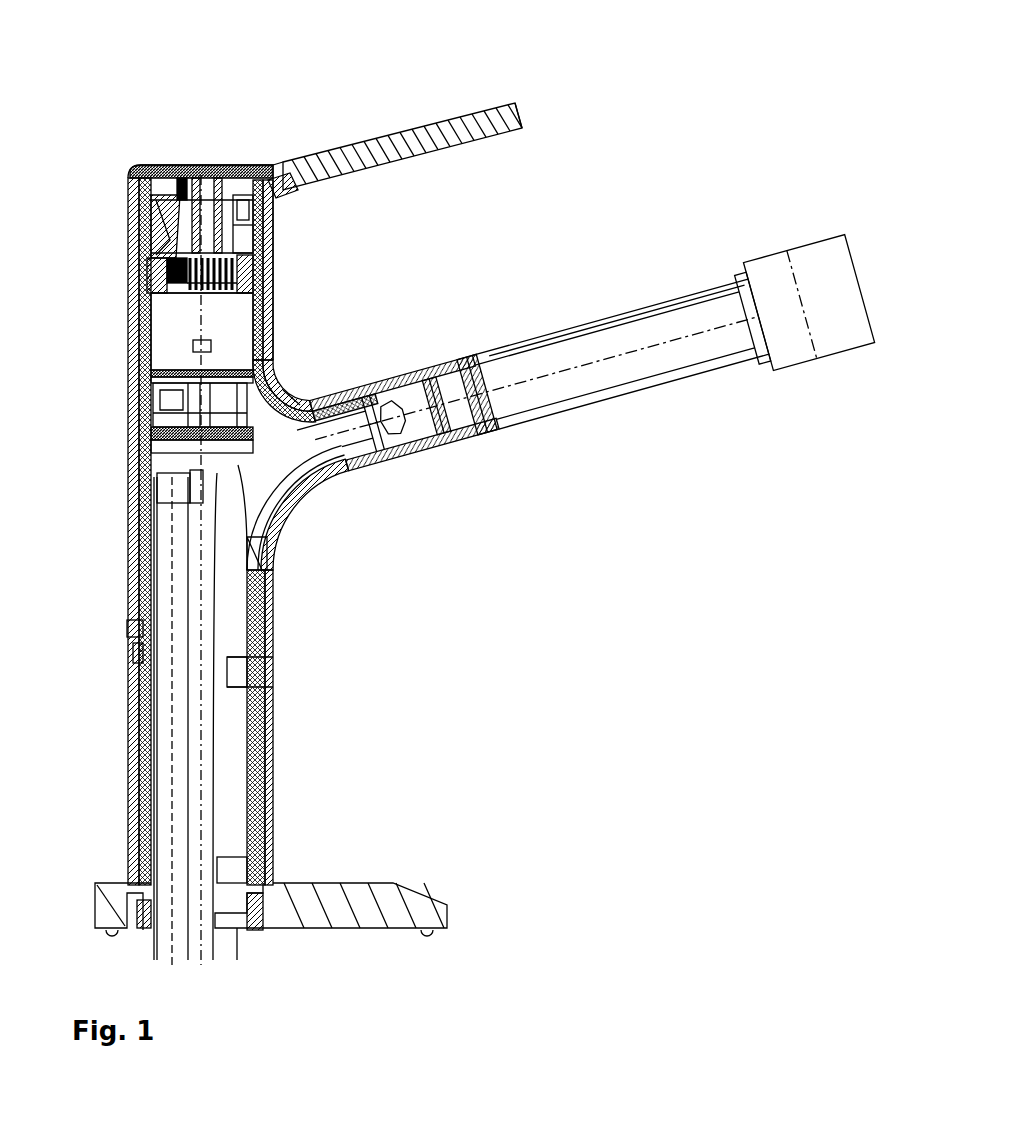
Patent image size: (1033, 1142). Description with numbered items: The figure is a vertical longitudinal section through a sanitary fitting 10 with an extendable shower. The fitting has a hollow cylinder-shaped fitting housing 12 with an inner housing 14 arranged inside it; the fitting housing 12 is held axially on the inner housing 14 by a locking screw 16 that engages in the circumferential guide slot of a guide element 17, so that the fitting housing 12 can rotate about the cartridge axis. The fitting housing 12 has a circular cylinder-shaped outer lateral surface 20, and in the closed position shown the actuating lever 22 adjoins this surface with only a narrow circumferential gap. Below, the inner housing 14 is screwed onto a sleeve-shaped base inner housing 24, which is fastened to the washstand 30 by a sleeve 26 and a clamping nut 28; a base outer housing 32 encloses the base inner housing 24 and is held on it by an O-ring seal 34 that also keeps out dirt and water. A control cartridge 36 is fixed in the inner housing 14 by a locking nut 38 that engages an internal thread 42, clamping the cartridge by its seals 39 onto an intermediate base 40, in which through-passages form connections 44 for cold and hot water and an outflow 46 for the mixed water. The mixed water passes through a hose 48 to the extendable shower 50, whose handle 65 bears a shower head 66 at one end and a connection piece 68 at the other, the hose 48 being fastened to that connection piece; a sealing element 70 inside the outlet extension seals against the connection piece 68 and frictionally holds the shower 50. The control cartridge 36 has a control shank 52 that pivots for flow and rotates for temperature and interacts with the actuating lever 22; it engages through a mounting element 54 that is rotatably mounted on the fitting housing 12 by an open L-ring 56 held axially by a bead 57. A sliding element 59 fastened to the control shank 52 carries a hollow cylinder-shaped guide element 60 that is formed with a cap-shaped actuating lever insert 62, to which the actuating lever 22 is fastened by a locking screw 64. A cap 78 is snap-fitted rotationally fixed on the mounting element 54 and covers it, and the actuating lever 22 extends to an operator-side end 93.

The sanitary fitting 10 is at (675, 148).
The fitting housing 12 is at (137, 331).
The inner housing 14 is at (137, 400).
The locking screw 16 is at (137, 627).
The guide element 17 is at (135, 648).
The outer lateral surface 20 is at (294, 333).
The actuating lever 22 is at (445, 113).
The base inner housing 24 is at (272, 768).
The sleeve 26 is at (273, 927).
The clamping nut 28 is at (145, 930).
The washstand 30 is at (397, 897).
The base outer housing 32 is at (268, 732).
The O-ring seal 34 is at (265, 693).
The control cartridge 36 is at (225, 317).
The locking nut 38 is at (277, 272).
The seals 39 is at (310, 398).
The intermediate base 40 is at (300, 463).
The internal thread 42 is at (277, 287).
The connections 44 is at (128, 490).
The outflow 46 is at (237, 448).
The hose 48 is at (207, 530).
The extendable shower 50 is at (618, 357).
The control shank 52 is at (277, 228).
The mounting element 54 is at (137, 242).
The L-ring 56 is at (137, 278).
The bead 57 is at (277, 250).
The sliding element 59 is at (220, 170).
The guide element 60 is at (184, 168).
The actuating lever insert 62 is at (160, 167).
The locking screw 64 is at (288, 195).
The handle 65 is at (583, 320).
The shower head 66 is at (829, 391).
The connection piece 68 is at (427, 428).
The sealing element 70 is at (457, 443).
The cap 78 is at (280, 167).
The operator-side end 93 is at (524, 121).